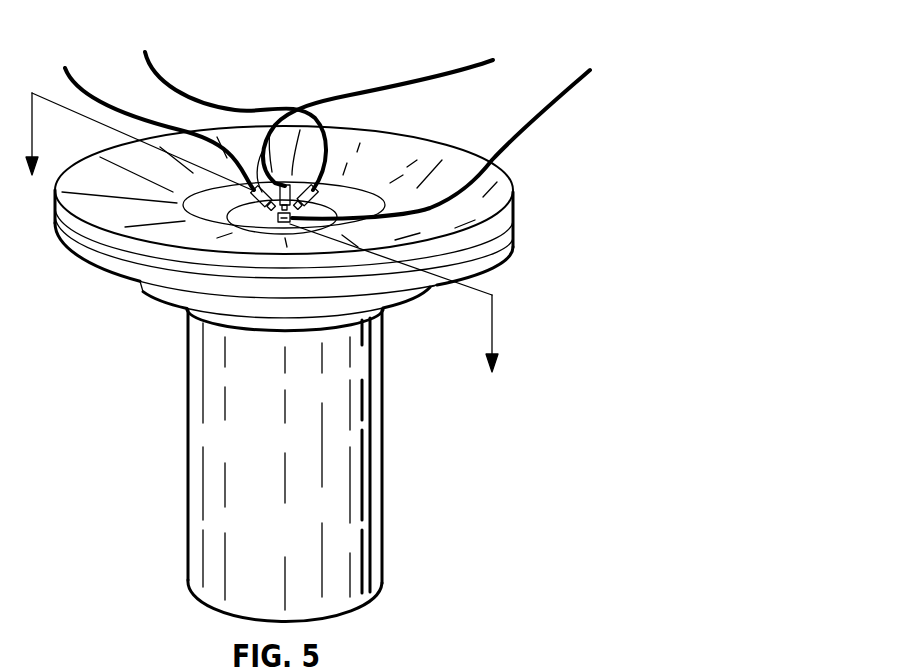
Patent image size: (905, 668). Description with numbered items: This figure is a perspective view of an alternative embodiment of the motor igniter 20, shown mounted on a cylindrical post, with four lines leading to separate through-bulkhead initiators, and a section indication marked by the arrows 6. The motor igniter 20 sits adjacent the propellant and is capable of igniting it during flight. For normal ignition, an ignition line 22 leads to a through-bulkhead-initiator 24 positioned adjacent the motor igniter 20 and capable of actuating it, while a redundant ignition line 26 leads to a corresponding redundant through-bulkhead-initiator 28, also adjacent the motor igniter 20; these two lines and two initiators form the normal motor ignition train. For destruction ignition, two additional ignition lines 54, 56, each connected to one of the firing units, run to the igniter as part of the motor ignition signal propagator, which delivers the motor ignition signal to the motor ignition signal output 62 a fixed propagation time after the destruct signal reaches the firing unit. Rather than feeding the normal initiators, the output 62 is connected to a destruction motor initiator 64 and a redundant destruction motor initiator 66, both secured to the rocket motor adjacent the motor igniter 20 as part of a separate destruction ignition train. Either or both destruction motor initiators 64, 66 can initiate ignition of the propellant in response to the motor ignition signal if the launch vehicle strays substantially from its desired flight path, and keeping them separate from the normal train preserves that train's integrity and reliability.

The motor igniter 20 is at (327, 500).
The ignition line 22 is at (518, 133).
The through-bulkhead-initiator 24 is at (290, 223).
The redundant ignition line 26 is at (427, 78).
The redundant through-bulkhead-initiator 28 is at (340, 168).
The ignition line 54 is at (163, 128).
The ignition line 56 is at (219, 108).
The motor ignition signal output 62 is at (262, 152).
The destruction motor initiator 64 is at (255, 197).
The redundant destruction motor initiator 66 is at (322, 193).
The section line 6- 6 is at (263, 246).